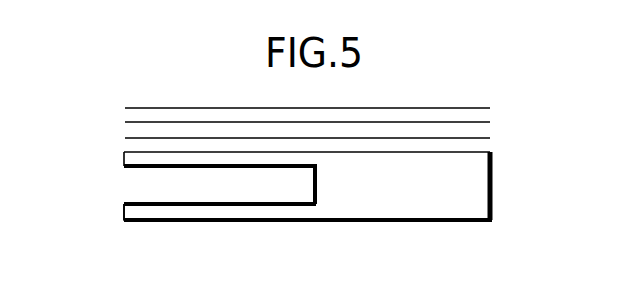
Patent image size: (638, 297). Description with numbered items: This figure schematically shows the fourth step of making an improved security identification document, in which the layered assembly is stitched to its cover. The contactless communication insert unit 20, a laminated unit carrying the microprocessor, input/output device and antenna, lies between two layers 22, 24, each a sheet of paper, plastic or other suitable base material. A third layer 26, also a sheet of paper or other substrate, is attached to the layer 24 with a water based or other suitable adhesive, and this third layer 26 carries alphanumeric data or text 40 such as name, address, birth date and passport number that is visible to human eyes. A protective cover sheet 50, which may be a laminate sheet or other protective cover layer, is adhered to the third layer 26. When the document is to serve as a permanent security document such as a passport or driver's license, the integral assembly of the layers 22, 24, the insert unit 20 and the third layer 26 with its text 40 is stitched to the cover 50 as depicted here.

The contactless communication insert unit 20 is at (493, 192).
The layer 22 is at (493, 168).
The layer 24 is at (493, 215).
The third layer 26 is at (493, 152).
The alphanumeric data or text 40 is at (122, 131).
The protective cover sheet 50 is at (124, 219).